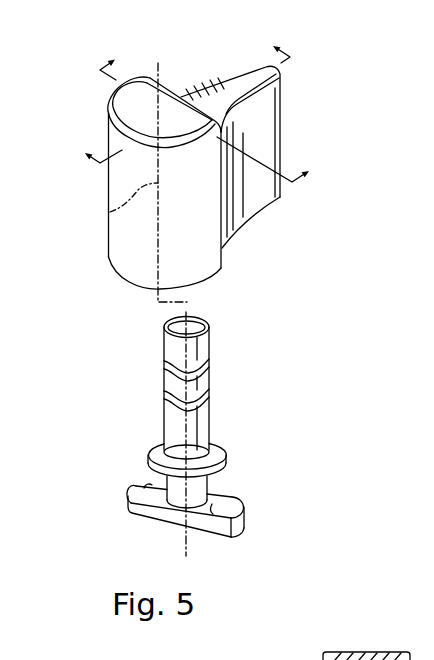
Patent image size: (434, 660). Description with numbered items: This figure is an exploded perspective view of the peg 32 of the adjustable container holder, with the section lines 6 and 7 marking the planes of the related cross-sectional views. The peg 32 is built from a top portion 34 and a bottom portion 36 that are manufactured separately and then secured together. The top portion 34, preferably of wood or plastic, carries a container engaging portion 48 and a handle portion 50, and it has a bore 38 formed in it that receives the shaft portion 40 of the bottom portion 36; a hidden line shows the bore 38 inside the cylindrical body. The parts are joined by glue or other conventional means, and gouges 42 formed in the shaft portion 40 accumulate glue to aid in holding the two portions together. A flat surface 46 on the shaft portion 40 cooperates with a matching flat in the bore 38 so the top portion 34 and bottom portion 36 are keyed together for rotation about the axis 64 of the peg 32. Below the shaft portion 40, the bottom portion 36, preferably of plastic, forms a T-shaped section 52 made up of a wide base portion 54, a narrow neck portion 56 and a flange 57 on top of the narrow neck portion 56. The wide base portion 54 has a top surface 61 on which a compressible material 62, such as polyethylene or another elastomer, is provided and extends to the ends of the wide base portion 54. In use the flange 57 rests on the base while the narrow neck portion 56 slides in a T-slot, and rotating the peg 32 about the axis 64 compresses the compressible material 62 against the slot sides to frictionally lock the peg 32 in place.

The section line 6- 6 is at (213, 114).
The section line 7- 7 is at (179, 97).
The peg 32 is at (121, 325).
The top portion 34 is at (226, 249).
The bottom portion 36 is at (216, 420).
The bore 38 is at (395, 658).
The shaft portion 40 is at (212, 374).
The gouges 42 is at (212, 366).
The flat surface 46 is at (168, 411).
The container engaging portion 48 is at (127, 272).
The handle portion 50 is at (283, 118).
The T-shaped section 52 is at (203, 519).
The wide base portion 54 is at (166, 519).
The narrow neck portion 56 is at (173, 493).
The flange 57 is at (222, 452).
The top surface 61 is at (249, 503).
The compressible material 62 is at (147, 484).
The axis 64 is at (110, 212).